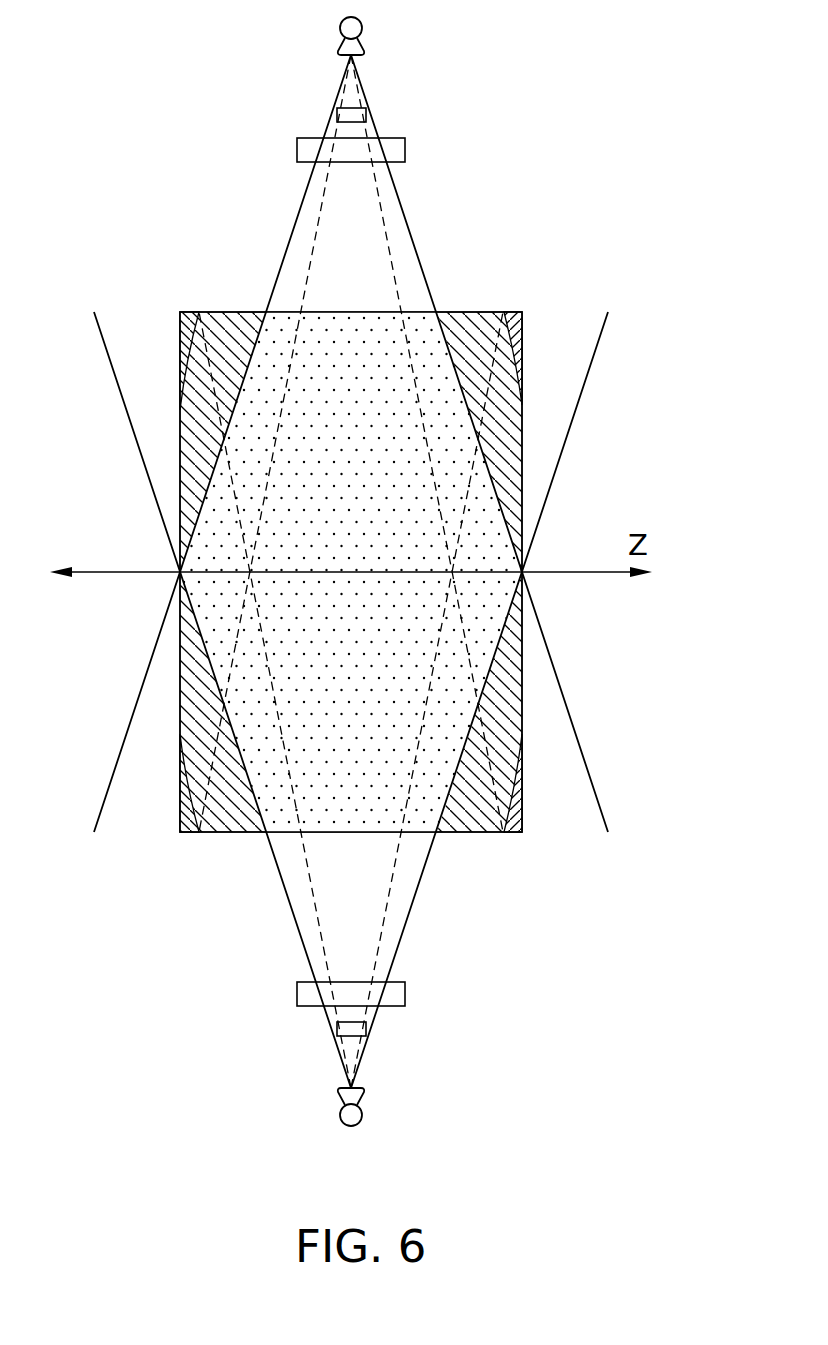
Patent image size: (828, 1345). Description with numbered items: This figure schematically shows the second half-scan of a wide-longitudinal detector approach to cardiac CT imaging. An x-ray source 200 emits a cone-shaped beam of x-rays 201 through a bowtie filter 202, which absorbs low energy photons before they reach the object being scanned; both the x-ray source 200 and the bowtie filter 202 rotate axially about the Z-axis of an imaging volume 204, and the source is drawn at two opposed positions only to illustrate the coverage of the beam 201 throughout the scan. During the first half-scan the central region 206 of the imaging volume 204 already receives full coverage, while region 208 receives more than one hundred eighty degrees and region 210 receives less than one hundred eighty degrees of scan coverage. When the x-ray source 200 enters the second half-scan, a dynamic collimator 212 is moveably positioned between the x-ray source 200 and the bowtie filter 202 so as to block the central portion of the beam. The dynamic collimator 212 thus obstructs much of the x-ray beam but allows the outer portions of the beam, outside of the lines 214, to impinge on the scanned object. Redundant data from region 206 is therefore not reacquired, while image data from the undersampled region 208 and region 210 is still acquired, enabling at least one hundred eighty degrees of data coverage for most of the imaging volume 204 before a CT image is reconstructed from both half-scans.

The x-ray source 200 is at (367, 30).
The cone-shaped beam of x-rays 201 is at (396, 188).
The bowtie filter 202 is at (297, 148).
The imaging volume 204 is at (523, 824).
The region of full scan coverage 206 is at (347, 325).
The region of greater than 180-degree scan coverage 208 is at (485, 312).
The region of less than 180-degree scan coverage 210 is at (185, 312).
The dynamic collimator 212 is at (366, 113).
The lines 214 is at (315, 232).